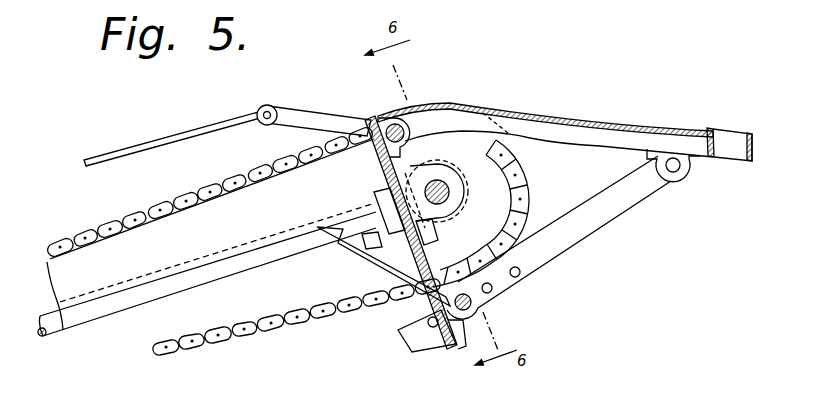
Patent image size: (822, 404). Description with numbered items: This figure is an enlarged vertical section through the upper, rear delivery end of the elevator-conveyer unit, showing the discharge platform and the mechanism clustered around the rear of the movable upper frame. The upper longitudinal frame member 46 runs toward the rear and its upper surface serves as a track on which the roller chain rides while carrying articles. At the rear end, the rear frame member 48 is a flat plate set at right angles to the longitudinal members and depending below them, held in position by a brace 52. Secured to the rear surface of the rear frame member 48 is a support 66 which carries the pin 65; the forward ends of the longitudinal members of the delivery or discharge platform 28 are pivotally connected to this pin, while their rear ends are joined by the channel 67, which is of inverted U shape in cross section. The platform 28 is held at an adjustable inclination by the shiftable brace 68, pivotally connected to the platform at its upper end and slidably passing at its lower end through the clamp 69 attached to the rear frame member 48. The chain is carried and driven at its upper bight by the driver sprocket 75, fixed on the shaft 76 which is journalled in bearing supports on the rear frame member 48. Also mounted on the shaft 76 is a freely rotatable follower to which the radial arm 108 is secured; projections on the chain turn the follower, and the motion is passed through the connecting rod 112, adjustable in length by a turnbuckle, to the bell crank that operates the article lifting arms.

The delivery or discharge platform 28 is at (605, 120).
The longitudinal frame member 46 is at (120, 277).
The rear frame member 48 is at (377, 193).
The brace 52 is at (362, 254).
The pin 65 is at (400, 128).
The support 66 is at (370, 117).
The channel 67 is at (731, 128).
The shiftable brace 68 is at (565, 238).
The clamp 69 is at (462, 346).
The driver sprocket 75 is at (493, 200).
The shaft 76 is at (445, 186).
The radial arm 108 is at (287, 120).
The connecting rod 112 is at (205, 126).